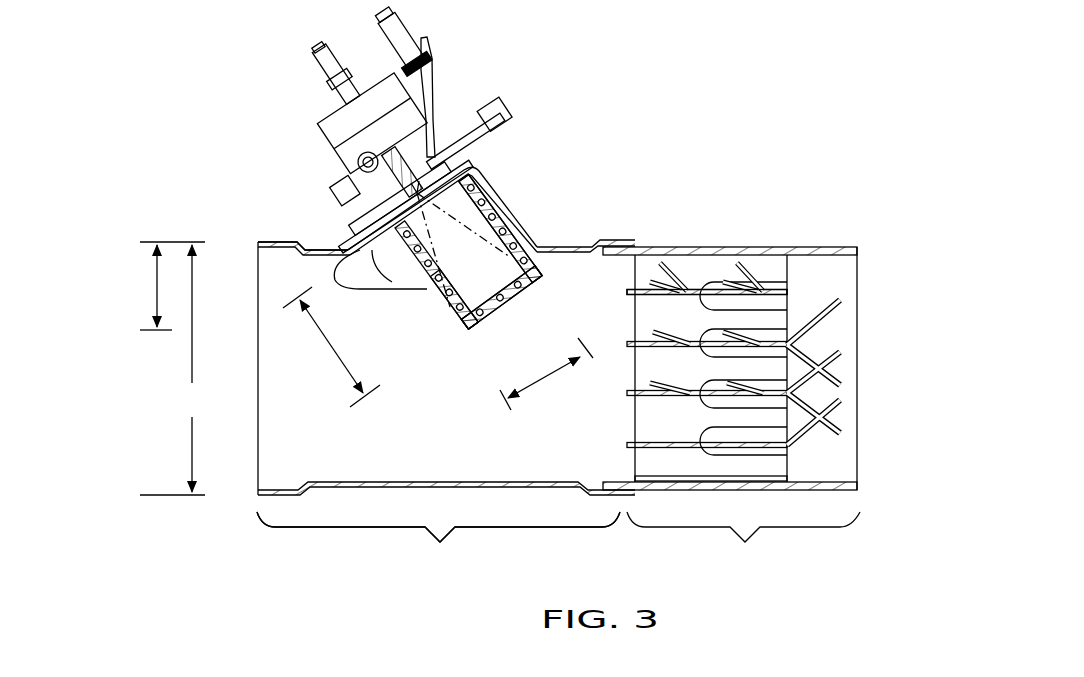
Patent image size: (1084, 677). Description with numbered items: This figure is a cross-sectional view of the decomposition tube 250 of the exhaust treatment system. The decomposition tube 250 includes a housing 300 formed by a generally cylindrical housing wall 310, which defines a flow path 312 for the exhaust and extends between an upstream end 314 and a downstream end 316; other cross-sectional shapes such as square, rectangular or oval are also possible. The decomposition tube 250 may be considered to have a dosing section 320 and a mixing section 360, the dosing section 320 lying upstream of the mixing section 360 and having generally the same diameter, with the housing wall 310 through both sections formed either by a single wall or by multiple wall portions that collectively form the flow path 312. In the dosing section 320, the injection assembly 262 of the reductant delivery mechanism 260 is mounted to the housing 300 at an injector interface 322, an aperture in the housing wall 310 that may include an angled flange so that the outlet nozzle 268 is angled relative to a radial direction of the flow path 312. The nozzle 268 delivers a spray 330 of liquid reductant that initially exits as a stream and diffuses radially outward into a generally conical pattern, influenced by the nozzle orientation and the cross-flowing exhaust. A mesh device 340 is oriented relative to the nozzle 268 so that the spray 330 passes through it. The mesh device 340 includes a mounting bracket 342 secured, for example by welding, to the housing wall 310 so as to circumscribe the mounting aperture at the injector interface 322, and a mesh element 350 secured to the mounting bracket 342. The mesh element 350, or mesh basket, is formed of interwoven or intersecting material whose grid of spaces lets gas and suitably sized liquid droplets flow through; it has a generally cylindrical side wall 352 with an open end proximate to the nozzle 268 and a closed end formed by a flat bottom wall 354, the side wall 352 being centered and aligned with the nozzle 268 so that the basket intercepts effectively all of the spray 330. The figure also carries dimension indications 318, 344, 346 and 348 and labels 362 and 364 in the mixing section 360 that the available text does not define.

The decomposition tube 250 is at (207, 149).
The reductant delivery mechanism 260 is at (448, 58).
The injection assembly 262 is at (332, 143).
The outlet nozzle 268 is at (438, 165).
The housing 300 is at (282, 239).
The housing wall 310 is at (282, 246).
The flow path 312 is at (318, 458).
The upstream end 314 is at (277, 434).
The downstream end 316 is at (833, 280).
The housing height 318 is at (177, 368).
The dosing section 320 is at (438, 544).
The injector interface 322 is at (499, 159).
The spray 330 is at (427, 253).
The mesh device 340 is at (432, 316).
The mounting bracket 342 is at (372, 249).
The side wall length 344 is at (322, 350).
The end wall length 346 is at (546, 386).
The housing offset height 348 is at (155, 292).
The mesh element 350 is at (483, 335).
The cylindrical side wall 352 is at (541, 232).
The flat bottom wall 354 is at (505, 307).
The mixing section 360 is at (558, 416).
The mixing plate 362 is at (656, 418).
The mixing blade 364 is at (815, 432).